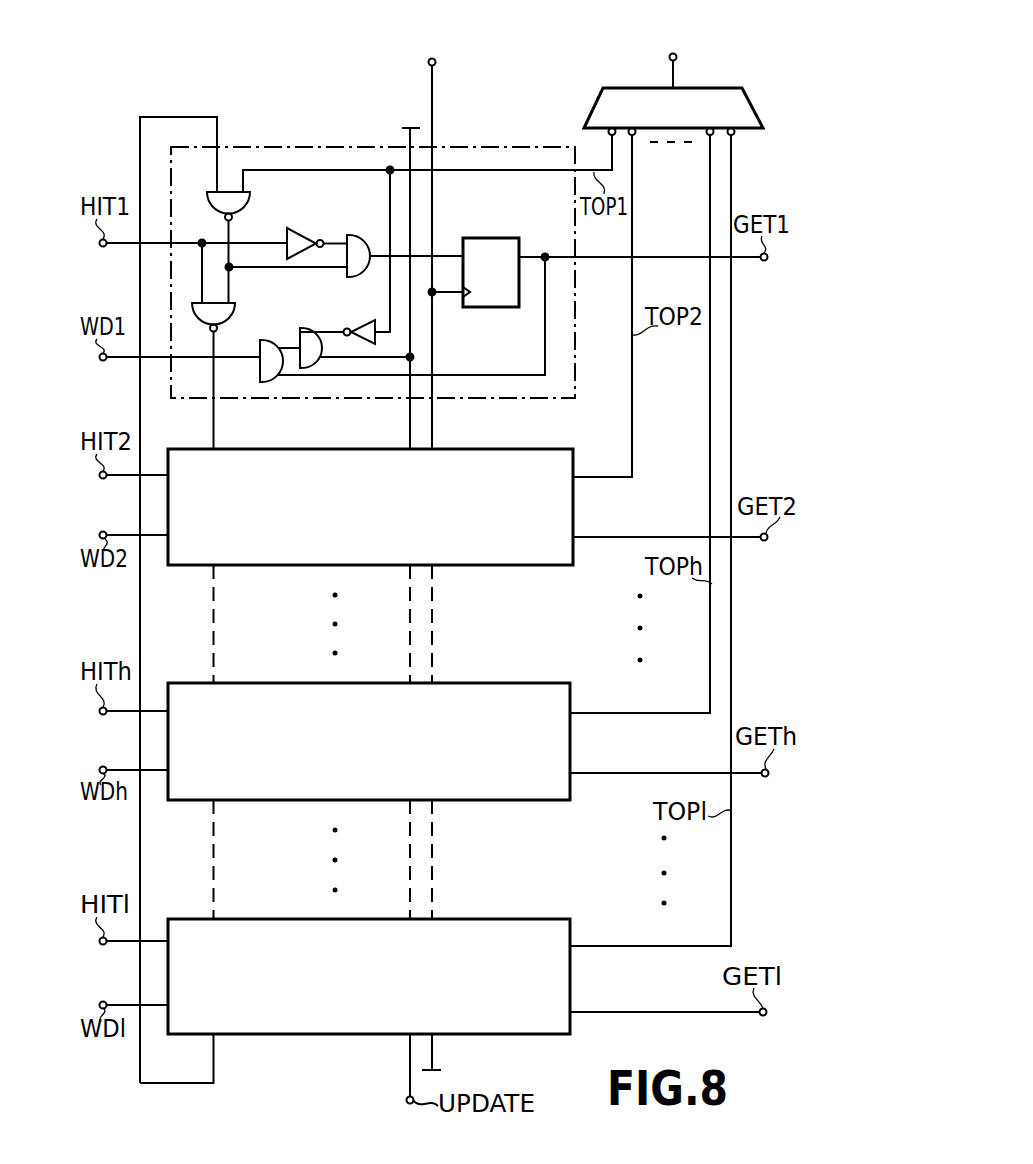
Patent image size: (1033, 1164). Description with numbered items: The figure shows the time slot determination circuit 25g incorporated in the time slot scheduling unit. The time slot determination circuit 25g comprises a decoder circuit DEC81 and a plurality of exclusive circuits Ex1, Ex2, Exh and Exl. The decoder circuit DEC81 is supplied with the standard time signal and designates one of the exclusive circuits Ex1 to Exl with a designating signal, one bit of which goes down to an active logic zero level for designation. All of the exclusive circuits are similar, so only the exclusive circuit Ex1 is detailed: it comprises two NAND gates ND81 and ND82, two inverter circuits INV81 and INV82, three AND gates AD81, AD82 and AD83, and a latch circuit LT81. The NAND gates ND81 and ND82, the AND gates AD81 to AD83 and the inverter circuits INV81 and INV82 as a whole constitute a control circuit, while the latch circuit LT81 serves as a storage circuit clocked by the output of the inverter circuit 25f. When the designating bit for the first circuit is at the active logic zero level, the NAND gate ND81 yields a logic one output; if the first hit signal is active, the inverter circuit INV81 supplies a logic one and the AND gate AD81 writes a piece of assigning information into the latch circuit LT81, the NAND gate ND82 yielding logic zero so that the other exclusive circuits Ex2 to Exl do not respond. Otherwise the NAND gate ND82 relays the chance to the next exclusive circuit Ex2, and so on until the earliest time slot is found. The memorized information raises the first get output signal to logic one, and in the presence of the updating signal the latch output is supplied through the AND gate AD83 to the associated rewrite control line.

The inverter circuit 25f is at (428, 62).
The time slot determination circuit 25g is at (673, 76).
The decoder circuit DEC81 is at (614, 88).
The exclusive circuit Ex1 is at (510, 124).
The exclusive circuit Ex2 is at (508, 442).
The exclusive circuit Exh is at (515, 675).
The exclusive circuit Exl is at (512, 907).
The NAND gate ND81 is at (262, 194).
The NAND gate ND82 is at (234, 304).
The inverter circuit INV81 is at (302, 219).
The inverter circuit INV82 is at (362, 318).
The AND gate AD81 is at (356, 232).
The AND gate AD82 is at (301, 329).
The AND gate AD83 is at (273, 383).
The latch circuit LT81 is at (486, 238).